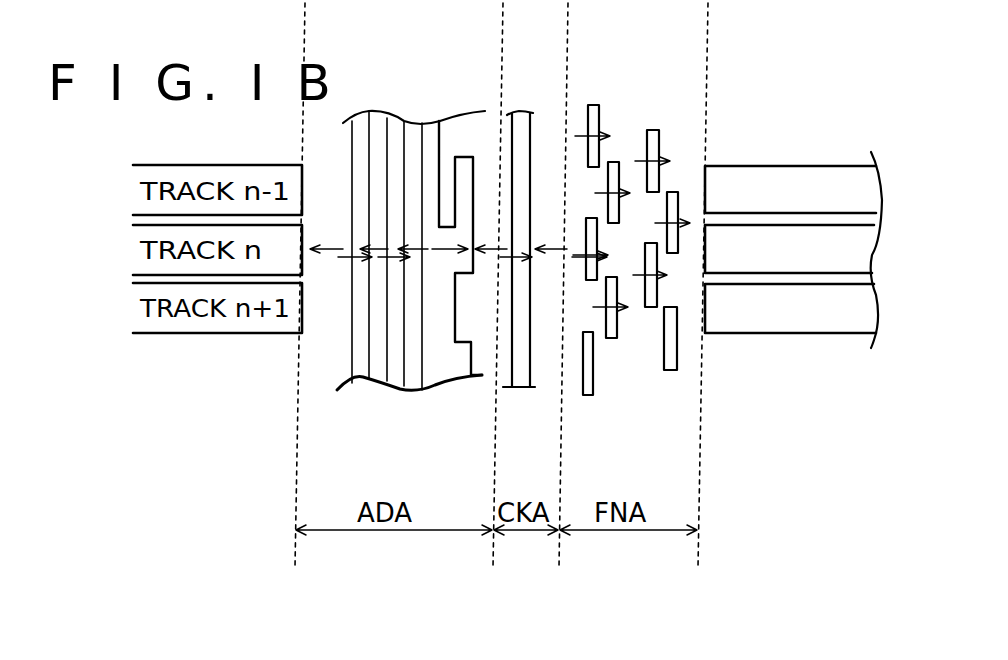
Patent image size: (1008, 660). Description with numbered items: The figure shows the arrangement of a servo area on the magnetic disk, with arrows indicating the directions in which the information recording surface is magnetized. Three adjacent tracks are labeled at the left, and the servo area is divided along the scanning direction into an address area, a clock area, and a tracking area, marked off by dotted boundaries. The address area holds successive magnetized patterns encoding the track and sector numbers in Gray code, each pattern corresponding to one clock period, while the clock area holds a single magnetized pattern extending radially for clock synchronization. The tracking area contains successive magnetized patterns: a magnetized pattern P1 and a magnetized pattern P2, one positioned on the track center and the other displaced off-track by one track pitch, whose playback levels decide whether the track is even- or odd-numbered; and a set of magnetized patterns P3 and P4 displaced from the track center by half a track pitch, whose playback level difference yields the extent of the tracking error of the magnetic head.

The magnetized pattern P1 is at (593, 105).
The magnetized pattern P2 is at (613, 162).
The magnetized pattern P3 is at (653, 130).
The magnetized pattern P4 is at (672, 192).